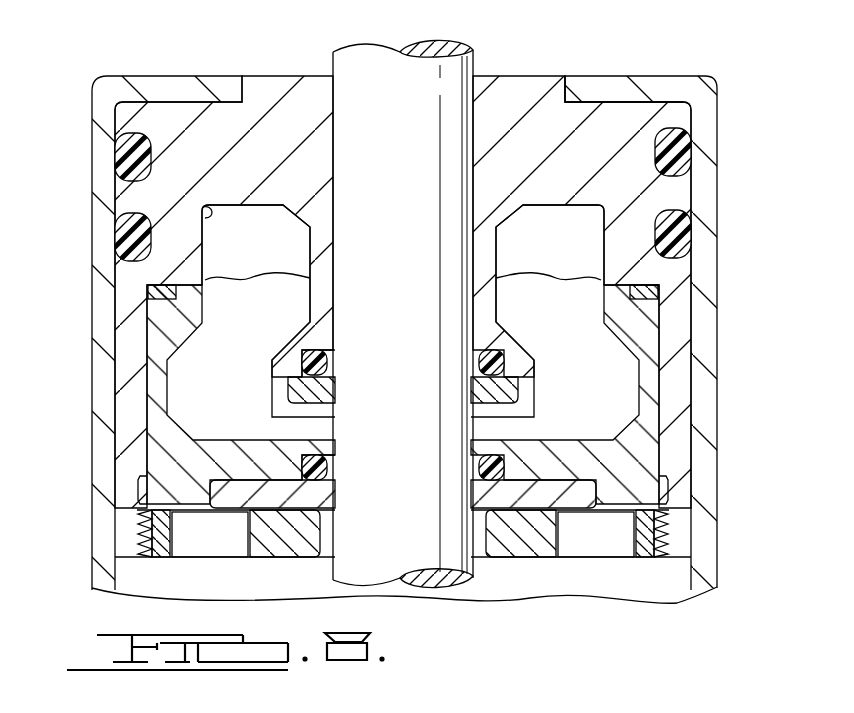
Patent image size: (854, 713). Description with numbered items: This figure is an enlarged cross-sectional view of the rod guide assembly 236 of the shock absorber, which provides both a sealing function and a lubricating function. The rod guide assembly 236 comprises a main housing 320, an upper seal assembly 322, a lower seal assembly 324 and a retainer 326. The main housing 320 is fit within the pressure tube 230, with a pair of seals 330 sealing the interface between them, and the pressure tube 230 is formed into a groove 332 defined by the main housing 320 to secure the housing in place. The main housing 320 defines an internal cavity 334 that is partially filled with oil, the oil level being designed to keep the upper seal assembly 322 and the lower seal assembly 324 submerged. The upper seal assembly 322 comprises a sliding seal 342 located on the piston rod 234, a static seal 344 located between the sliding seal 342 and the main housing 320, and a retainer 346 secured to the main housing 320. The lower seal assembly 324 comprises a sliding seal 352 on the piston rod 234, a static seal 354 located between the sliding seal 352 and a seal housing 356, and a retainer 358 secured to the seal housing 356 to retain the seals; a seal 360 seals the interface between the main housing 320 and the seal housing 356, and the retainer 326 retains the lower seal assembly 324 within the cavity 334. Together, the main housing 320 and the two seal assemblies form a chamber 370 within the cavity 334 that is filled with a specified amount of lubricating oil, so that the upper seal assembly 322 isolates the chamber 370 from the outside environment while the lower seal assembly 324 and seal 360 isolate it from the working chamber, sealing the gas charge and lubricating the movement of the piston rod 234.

The pressure tube 230 is at (703, 538).
The piston rod 234 is at (421, 148).
The rod guide assembly 236 is at (578, 565).
The main housing 320 is at (513, 93).
The upper seal assembly 322 is at (517, 365).
The lower seal assembly 324 is at (515, 462).
The retainer 326 is at (655, 548).
The seals 330 is at (680, 162).
The groove 332 is at (633, 93).
The internal cavity 334 is at (203, 212).
The sliding seal 342 is at (327, 358).
The static seal 344 is at (302, 368).
The retainer 346 is at (300, 393).
The sliding seal 352 is at (327, 466).
The static seal 354 is at (335, 452).
The seal housing 356 is at (160, 462).
The retainer 358 is at (310, 496).
The seal 360 is at (148, 291).
The chamber 370 is at (227, 330).